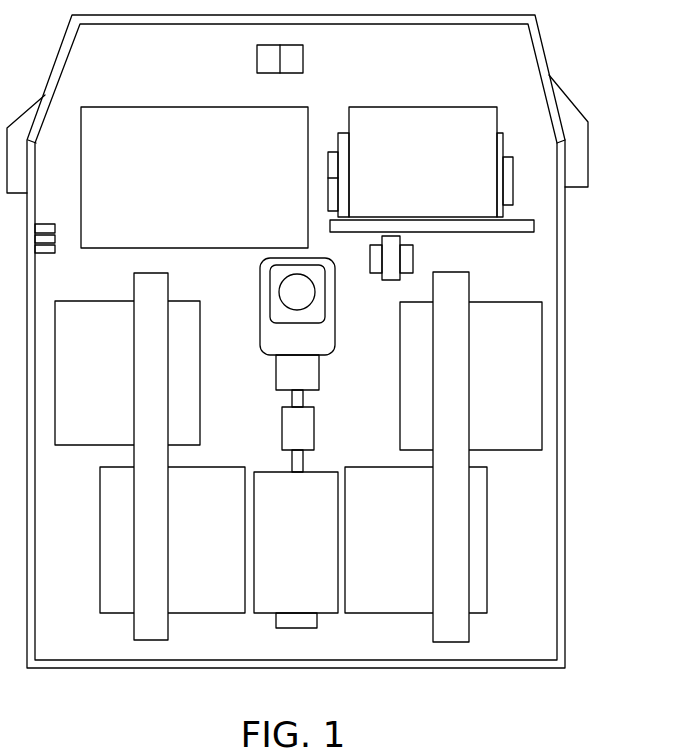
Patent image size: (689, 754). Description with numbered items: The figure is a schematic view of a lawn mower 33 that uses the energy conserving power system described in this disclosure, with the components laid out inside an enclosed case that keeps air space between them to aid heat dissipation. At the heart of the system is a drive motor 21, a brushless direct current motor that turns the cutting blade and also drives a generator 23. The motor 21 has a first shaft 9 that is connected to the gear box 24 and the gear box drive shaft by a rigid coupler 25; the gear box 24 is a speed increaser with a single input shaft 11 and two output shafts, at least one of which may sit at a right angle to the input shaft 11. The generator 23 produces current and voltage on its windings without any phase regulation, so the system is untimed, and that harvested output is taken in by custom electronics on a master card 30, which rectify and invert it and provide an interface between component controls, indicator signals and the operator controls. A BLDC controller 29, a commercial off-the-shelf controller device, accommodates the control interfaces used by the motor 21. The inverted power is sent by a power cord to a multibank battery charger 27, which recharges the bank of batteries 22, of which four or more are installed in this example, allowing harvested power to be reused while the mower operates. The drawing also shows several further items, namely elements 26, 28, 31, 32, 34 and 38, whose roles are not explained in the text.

The first shaft 9 is at (300, 463).
The input shaft 11 is at (293, 397).
The drive motor 21 is at (284, 549).
The bank of batteries 22 is at (83, 379).
The generator 23 is at (291, 296).
The gear box 24 is at (285, 350).
The rigid coupler 25 is at (286, 436).
The interior cavity 26 is at (346, 401).
The multibank battery charger 27 is at (183, 184).
The connector 28 is at (393, 262).
The BLDC controller 29 is at (506, 160).
The master card 30 is at (411, 176).
The switch 31 is at (296, 60).
The button 32 is at (263, 60).
The lawn mower 33 is at (52, 249).
The support rail 34 is at (139, 451).
The housing 38 is at (559, 288).